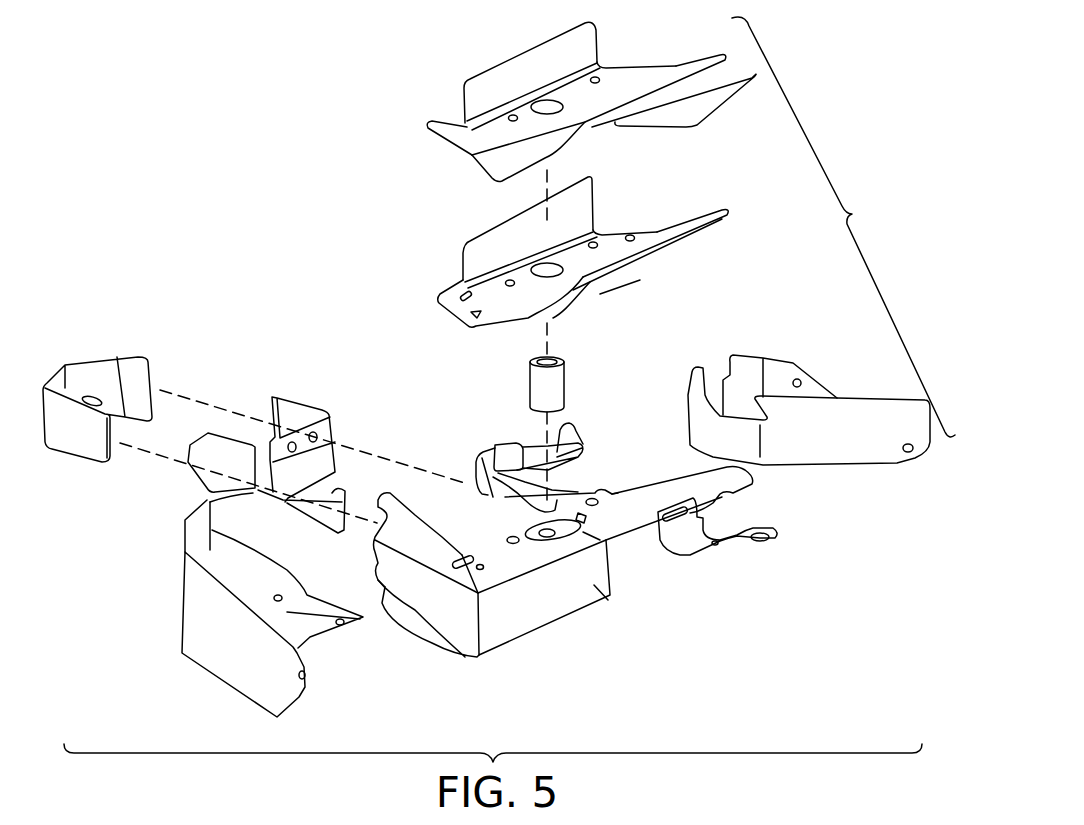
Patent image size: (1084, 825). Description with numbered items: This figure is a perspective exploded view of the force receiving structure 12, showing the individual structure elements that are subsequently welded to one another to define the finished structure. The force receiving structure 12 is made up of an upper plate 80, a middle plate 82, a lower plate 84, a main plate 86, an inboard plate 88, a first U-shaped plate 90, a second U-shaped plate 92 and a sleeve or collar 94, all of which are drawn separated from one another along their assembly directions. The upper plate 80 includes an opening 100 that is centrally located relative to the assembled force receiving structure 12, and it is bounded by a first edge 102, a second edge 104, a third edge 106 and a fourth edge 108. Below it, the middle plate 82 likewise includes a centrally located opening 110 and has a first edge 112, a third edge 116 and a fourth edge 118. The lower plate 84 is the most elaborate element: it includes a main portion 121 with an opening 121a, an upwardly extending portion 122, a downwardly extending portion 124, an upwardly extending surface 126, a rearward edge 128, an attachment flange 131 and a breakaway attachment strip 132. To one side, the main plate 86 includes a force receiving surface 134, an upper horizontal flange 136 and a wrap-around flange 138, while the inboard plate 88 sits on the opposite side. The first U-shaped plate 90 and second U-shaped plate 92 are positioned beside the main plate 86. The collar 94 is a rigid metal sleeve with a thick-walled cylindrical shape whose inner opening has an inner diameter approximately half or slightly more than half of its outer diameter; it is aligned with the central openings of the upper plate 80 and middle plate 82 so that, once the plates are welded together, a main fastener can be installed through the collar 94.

The force receiving structure 12 is at (843, 227).
The upper plate 80 is at (570, 93).
The middle plate 82 is at (577, 252).
The lower plate 84 is at (598, 554).
The main plate 86 is at (239, 586).
The inboard plate 88 is at (843, 435).
The first U-shaped plate 90 is at (93, 370).
The second U-shaped plate 92 is at (297, 415).
The collar 94 is at (544, 386).
The opening 100 is at (546, 101).
The first edge 102 is at (500, 64).
The second edge 104 is at (450, 140).
The third edge 106 is at (678, 76).
The fourth edge 108 is at (629, 65).
The opening 110 is at (550, 267).
The first edge 112 is at (493, 223).
The third edge 116 is at (623, 268).
The fourth edge 118 is at (628, 235).
The main portion 121 is at (492, 527).
The opening 121a is at (610, 565).
The upwardly extending portion 122 is at (517, 442).
The downwardly extending portion 124 is at (428, 588).
The upwardly extending surface 126 is at (522, 605).
The rearward edge 128 is at (616, 490).
The attachment flange 131 is at (557, 456).
The breakaway attachment strip 132 is at (745, 546).
The force receiving surface 134 is at (215, 643).
The upper horizontal flange 136 is at (313, 597).
The wrap-around flange 138 is at (252, 520).